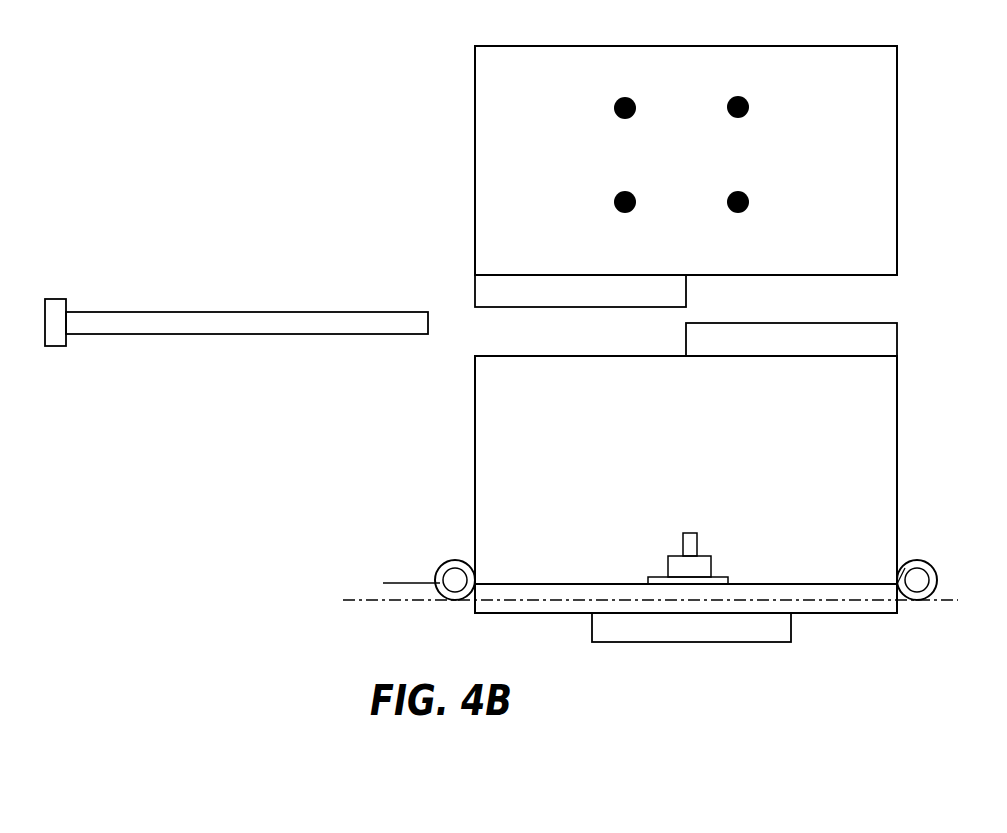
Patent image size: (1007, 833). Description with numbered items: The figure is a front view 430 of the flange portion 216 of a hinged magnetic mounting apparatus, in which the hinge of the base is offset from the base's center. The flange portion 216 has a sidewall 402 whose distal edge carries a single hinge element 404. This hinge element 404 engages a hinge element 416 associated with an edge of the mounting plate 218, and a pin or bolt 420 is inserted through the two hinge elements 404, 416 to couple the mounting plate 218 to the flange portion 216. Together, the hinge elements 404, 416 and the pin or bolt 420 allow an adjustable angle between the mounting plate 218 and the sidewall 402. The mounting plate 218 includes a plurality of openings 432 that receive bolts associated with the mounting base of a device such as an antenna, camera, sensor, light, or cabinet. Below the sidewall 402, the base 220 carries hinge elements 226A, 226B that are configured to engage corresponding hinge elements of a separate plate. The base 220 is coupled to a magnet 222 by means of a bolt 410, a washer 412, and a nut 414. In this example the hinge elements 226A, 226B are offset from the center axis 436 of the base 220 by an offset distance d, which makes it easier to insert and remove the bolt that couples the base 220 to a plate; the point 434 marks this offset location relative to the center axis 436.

The front view 430 is at (177, 68).
The mounting plate 218 is at (475, 120).
The openings 432 is at (614, 103).
The hinge element 416 is at (540, 308).
The hinge element 404 is at (787, 323).
The sidewall 402 is at (475, 433).
The pin or bolt 420 is at (212, 311).
The flange portion 216 is at (292, 463).
The base 220 is at (587, 583).
The magnet 222 is at (642, 643).
The washer 412 is at (729, 577).
The nut 414 is at (712, 557).
The bolt 410 is at (687, 543).
The hinge element 226A is at (477, 581).
The hinge element 226B is at (922, 598).
The center axis 436 is at (343, 600).
The contact point 434 is at (473, 598).
The offset distance d is at (409, 623).